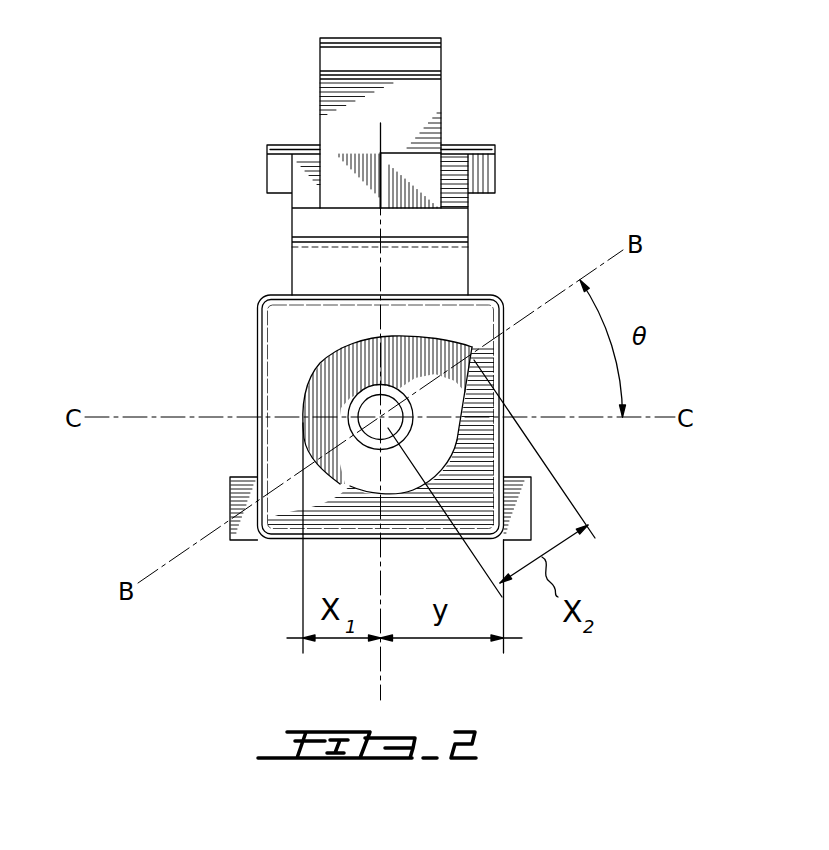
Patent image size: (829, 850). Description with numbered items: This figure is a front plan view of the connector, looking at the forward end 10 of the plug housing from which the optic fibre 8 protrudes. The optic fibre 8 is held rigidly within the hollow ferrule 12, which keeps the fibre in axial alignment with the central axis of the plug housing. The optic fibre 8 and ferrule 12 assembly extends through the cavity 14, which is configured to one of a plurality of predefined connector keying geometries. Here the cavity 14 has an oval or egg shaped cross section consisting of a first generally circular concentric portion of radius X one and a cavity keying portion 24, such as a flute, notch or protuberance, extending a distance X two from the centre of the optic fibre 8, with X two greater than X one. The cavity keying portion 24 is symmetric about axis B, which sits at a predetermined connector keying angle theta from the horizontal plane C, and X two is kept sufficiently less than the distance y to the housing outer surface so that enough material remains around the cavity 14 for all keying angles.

The optic fibre 8 is at (352, 410).
The forward end 10 is at (297, 330).
The hollow ferrule 12 is at (362, 449).
The cavity 14 is at (304, 438).
The cavity keying portion 24 is at (475, 355).